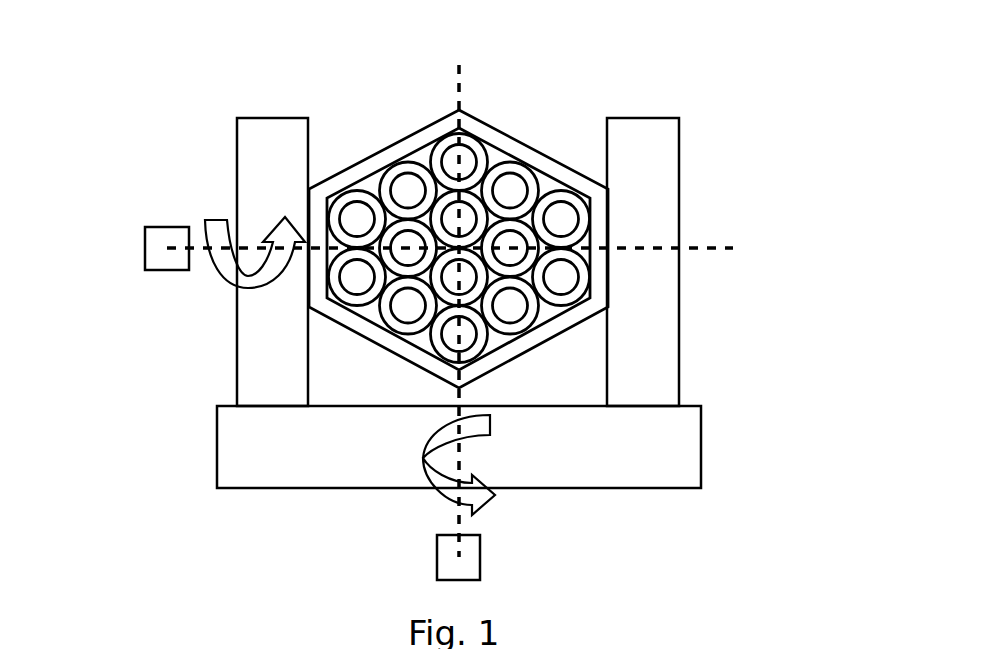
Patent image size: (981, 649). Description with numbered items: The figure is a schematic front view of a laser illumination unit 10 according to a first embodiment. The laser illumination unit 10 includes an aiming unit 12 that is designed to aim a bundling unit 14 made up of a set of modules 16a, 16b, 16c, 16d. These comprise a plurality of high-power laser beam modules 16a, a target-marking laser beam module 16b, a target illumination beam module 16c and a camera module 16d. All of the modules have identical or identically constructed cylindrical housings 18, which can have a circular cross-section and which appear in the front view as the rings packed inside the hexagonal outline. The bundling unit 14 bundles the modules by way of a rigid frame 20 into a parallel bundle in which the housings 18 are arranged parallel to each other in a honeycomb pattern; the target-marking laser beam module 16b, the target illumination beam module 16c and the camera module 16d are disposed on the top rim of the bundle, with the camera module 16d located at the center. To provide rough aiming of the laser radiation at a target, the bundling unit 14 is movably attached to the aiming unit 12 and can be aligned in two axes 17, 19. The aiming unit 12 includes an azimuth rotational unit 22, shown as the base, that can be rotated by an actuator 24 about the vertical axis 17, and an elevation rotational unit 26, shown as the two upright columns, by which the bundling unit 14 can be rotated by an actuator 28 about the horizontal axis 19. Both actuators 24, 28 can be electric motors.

The laser illumination unit 10 is at (732, 65).
The aiming unit 12 is at (748, 224).
The bundling unit 14 is at (500, 131).
The high-power laser beam modules 16a is at (700, 323).
The target-marking laser beam module 16b is at (511, 178).
The target illumination beam module 16c is at (408, 188).
The camera module 16d is at (473, 150).
The axis 17 is at (456, 521).
The cylindrical housings 18 is at (326, 262).
The axis 19 is at (240, 275).
The rigid frame 20 is at (548, 172).
The azimuth rotational unit 22 is at (670, 481).
The actuator 24 is at (481, 567).
The elevation rotational unit 26 is at (250, 377).
The actuator 28 is at (145, 243).